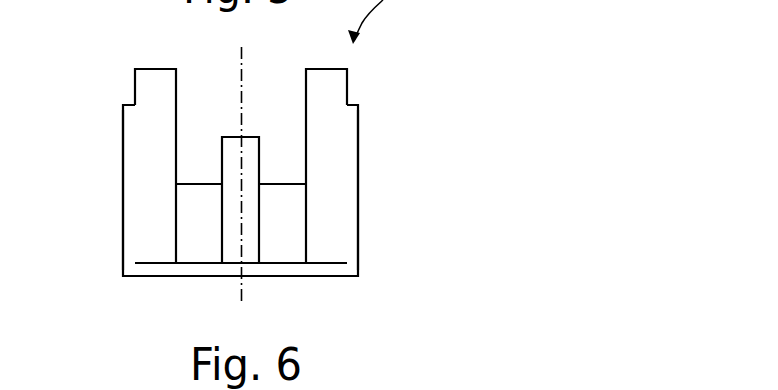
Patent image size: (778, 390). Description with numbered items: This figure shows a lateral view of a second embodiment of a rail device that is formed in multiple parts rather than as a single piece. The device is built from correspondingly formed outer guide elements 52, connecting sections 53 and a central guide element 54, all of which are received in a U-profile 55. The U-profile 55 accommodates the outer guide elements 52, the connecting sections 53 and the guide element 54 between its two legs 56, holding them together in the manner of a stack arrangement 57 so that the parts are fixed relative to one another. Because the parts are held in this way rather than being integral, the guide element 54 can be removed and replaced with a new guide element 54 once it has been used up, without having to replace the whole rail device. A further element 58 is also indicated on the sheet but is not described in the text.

The outer guide element 52 is at (150, 93).
The connecting section 53 is at (190, 247).
The guide element 54 is at (235, 248).
The U-profile 55 is at (369, 226).
The leg 56 is at (130, 192).
The stack arrangement 57 is at (147, 43).
The element 58 is at (353, 385).